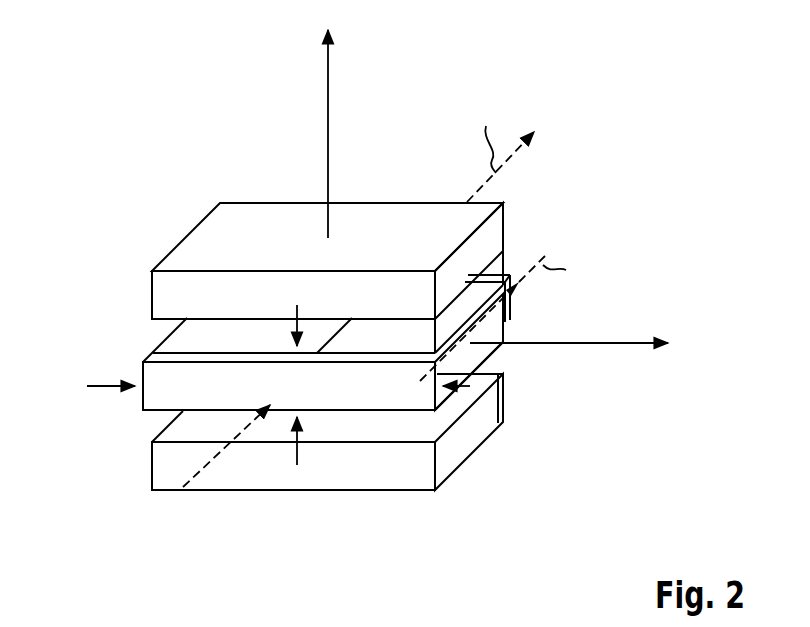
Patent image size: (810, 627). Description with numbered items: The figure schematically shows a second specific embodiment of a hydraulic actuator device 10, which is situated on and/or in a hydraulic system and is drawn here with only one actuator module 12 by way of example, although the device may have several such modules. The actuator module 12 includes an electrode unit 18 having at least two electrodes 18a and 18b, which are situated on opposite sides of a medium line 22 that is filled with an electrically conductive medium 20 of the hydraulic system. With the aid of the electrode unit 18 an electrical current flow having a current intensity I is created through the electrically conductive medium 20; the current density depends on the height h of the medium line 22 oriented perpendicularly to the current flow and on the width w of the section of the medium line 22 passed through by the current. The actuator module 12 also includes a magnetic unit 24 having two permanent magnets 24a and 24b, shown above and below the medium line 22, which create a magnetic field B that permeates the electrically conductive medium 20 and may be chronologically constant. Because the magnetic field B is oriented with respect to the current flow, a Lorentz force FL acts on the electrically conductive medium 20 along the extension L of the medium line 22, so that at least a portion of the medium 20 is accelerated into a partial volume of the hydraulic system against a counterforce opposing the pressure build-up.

The hydraulic actuator device 10 is at (140, 165).
The actuator module 12 is at (253, 518).
The electrode unit 18 is at (377, 388).
The electrode 18a is at (438, 399).
The electrode 18b is at (508, 322).
The electrically conductive medium 20 is at (503, 426).
The medium line 22 is at (186, 345).
The magnetic unit 24 is at (312, 396).
The permanent magnet 24a is at (152, 302).
The permanent magnet 24b is at (152, 468).